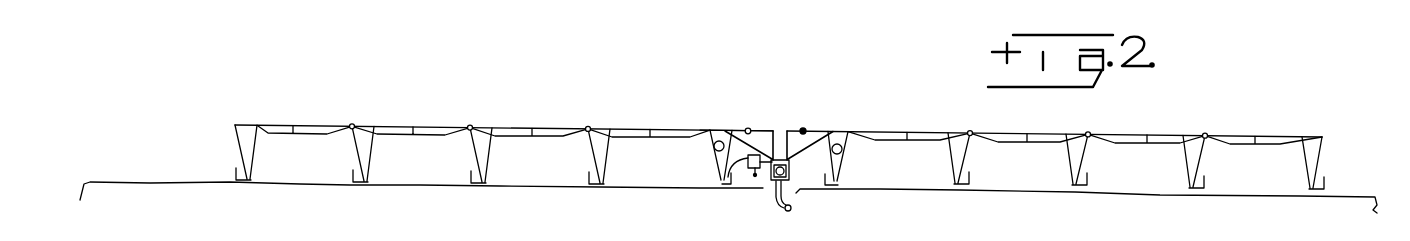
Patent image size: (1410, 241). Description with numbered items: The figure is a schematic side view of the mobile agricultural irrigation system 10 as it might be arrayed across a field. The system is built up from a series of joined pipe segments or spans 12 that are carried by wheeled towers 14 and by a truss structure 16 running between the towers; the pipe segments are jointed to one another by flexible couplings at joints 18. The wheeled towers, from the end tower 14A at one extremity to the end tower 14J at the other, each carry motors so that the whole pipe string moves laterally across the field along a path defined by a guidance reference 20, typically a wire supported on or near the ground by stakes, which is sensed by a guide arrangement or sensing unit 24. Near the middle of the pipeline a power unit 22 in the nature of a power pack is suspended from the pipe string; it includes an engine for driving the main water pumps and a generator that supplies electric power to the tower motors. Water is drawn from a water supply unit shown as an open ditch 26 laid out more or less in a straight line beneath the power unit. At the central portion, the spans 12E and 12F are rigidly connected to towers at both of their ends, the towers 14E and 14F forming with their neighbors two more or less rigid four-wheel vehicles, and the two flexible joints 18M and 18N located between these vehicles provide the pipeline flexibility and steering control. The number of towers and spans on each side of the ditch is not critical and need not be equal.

The mobile agricultural irrigation system 10 is at (672, 112).
The pipe segments or spans 12 is at (512, 127).
The span 12E is at (758, 130).
The span 12F is at (796, 130).
The wheeled towers 14 is at (468, 150).
The wheeled tower 14A is at (237, 143).
The wheeled tower 14E is at (708, 159).
The wheeled tower 14F is at (841, 163).
The wheeled tower 14J is at (1323, 153).
The truss structure 16 is at (548, 136).
The joints 18 is at (353, 126).
The flexible joint 18M is at (748, 128).
The flexible joint 18N is at (803, 130).
The guidance reference 20 is at (753, 178).
The power unit 22 is at (768, 182).
The sensing unit 24 is at (728, 178).
The open ditch 26 is at (790, 209).